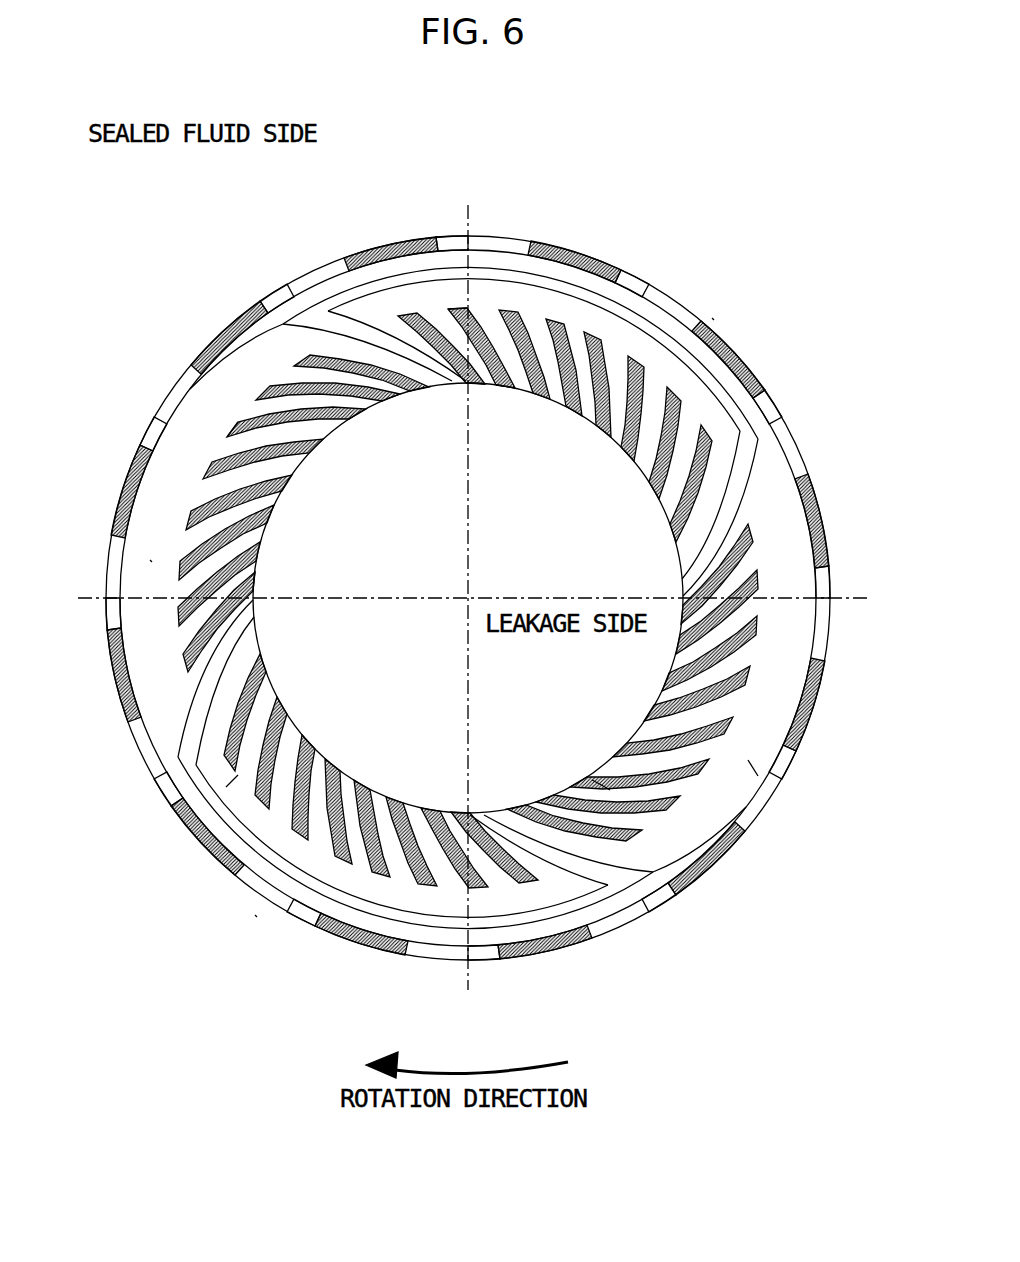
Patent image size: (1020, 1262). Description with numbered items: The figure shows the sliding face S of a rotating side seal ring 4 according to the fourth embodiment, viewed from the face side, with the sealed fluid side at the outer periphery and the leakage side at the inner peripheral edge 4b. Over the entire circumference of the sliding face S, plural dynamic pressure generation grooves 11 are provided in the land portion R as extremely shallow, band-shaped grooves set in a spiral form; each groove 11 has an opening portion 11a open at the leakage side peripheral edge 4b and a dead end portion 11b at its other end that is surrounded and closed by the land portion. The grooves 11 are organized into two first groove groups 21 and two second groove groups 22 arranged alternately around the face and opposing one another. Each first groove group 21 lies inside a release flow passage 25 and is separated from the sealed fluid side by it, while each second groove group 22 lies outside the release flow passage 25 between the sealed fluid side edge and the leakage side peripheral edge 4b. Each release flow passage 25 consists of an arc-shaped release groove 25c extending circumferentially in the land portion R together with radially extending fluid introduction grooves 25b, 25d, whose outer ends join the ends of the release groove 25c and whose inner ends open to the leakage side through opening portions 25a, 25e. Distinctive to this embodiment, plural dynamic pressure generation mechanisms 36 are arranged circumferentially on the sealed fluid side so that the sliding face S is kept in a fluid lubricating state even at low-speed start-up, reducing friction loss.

The rotating side seal ring 4 is at (722, 222).
The leakage side peripheral edge 4b is at (650, 740).
The dynamic pressure generation groove 11 is at (478, 660).
The opening portion 11a is at (515, 398).
The dead end portion 11b is at (462, 298).
The first groove group 21 is at (683, 385).
The second groove group 22 is at (175, 530).
The release flow passage 25 is at (482, 250).
The opening portion 25a is at (655, 580).
The fluid introduction groove 25b is at (800, 510).
The release groove 25c is at (468, 592).
The fluid introduction groove 25d is at (250, 318).
The opening portion 25e is at (447, 392).
The dynamic pressure generation mechanism 36 is at (575, 248).
The land portion R is at (712, 318).
The sliding face S is at (797, 425).